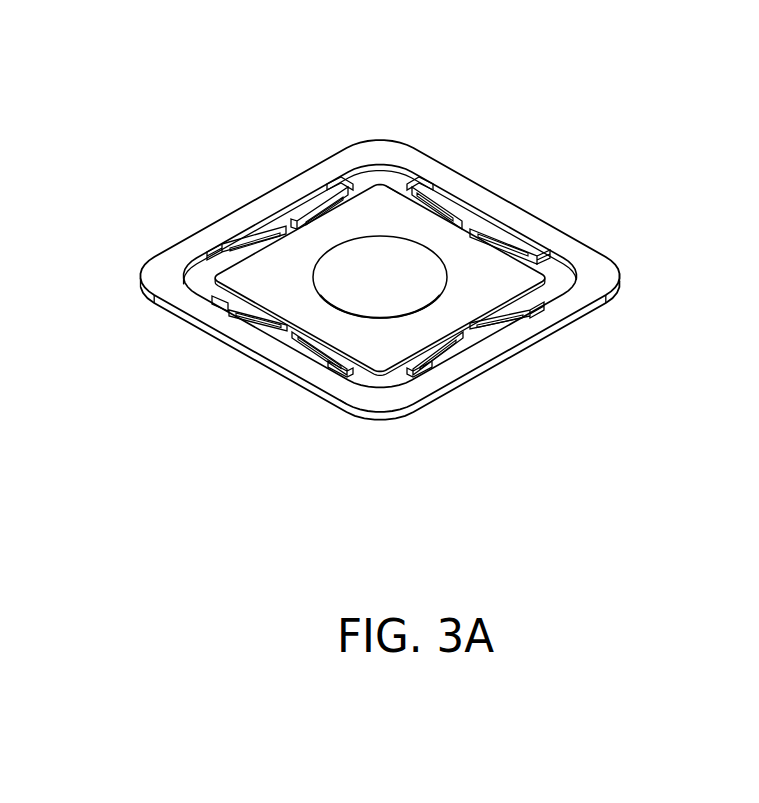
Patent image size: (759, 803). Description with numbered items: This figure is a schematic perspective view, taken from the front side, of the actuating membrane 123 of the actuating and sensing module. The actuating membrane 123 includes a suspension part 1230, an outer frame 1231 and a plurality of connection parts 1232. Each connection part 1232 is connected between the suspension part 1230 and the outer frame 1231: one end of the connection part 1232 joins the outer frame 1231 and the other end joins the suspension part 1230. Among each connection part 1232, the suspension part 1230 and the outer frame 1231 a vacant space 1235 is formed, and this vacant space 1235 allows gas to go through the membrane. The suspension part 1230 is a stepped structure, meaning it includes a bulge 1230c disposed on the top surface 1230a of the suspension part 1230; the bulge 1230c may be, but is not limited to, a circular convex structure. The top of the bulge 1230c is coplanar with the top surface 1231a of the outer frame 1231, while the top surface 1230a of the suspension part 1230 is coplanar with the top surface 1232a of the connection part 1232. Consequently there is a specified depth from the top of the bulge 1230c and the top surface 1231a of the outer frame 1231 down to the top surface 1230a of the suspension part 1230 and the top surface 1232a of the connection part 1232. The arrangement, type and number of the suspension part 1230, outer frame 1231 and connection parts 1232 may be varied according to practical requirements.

The actuating membrane 123 is at (667, 55).
The suspension part 1230 is at (377, 183).
The top surface of the suspension part 1230a is at (392, 196).
The bulge 1230c is at (403, 270).
The outer frame 1231 is at (399, 393).
The top surface of the outer frame 1231a is at (372, 400).
The connection part 1232 is at (293, 220).
The top surface of the connection part 1232a is at (283, 215).
The vacant space 1235 is at (553, 277).